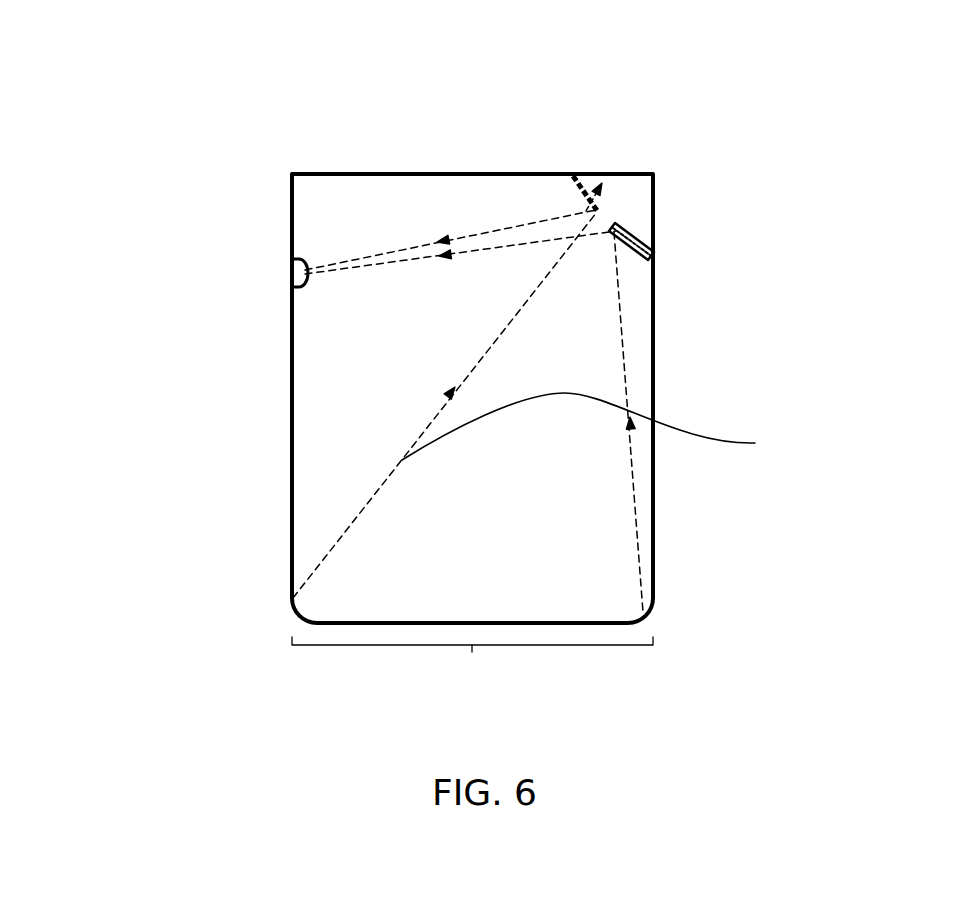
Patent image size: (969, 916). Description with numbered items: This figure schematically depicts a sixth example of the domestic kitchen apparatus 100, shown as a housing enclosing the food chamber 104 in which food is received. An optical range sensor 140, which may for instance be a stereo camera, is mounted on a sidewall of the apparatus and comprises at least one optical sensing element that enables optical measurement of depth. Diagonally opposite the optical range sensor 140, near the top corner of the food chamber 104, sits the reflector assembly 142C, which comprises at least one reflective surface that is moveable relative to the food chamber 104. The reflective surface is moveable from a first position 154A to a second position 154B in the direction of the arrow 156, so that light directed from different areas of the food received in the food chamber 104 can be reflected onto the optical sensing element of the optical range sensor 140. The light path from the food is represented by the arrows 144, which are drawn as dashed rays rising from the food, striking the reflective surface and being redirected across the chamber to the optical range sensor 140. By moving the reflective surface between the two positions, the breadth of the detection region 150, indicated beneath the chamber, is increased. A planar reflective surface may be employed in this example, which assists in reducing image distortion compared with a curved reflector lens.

The domestic kitchen apparatus 100 is at (144, 151).
The food chamber 104 is at (328, 472).
The optical range sensor 140 is at (292, 268).
The reflector assembly 142C is at (632, 238).
The arrows 144 is at (635, 493).
The detection region 150 is at (472, 661).
The first position 154A is at (637, 257).
The second position 154B is at (575, 180).
The arrow 156 is at (612, 218).